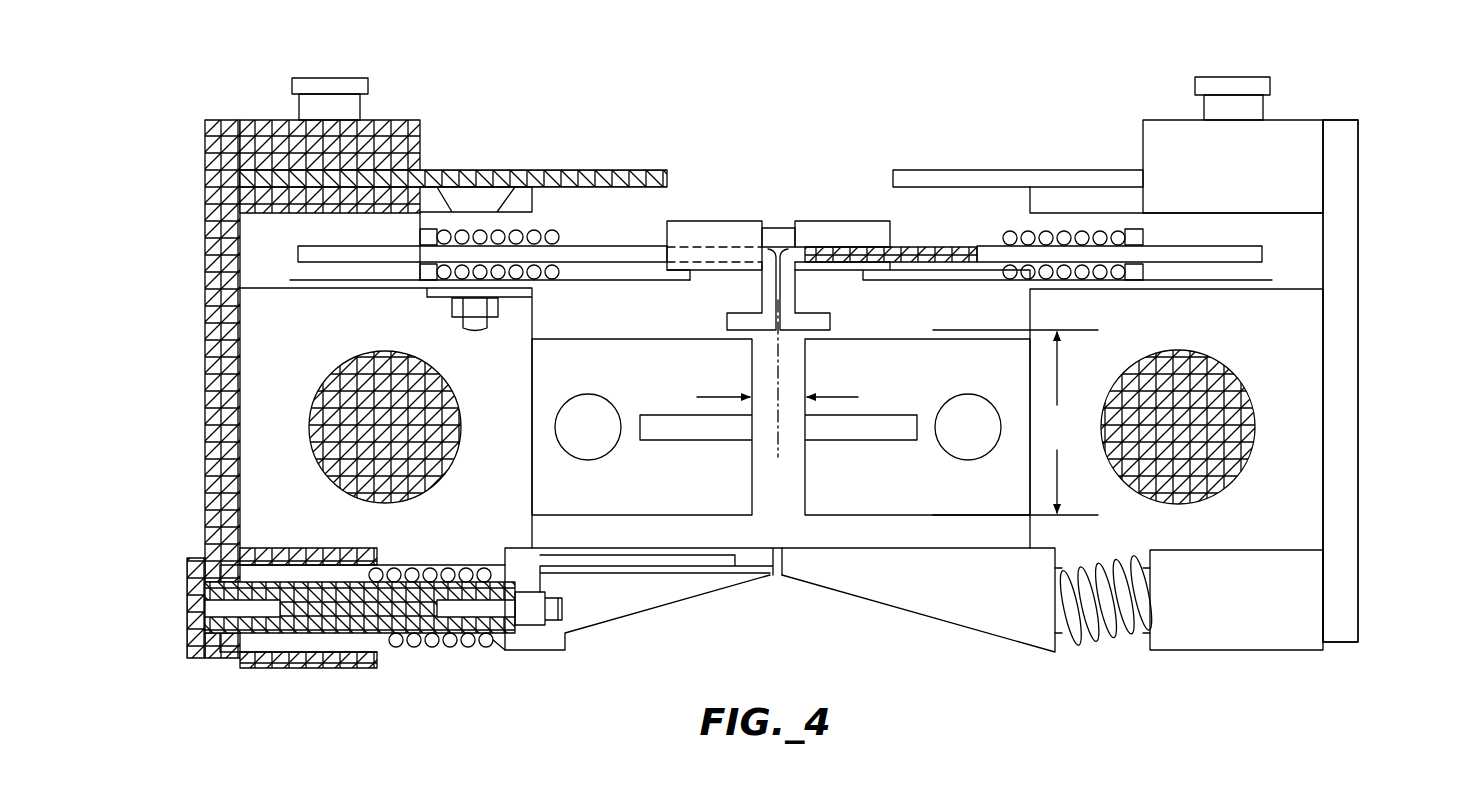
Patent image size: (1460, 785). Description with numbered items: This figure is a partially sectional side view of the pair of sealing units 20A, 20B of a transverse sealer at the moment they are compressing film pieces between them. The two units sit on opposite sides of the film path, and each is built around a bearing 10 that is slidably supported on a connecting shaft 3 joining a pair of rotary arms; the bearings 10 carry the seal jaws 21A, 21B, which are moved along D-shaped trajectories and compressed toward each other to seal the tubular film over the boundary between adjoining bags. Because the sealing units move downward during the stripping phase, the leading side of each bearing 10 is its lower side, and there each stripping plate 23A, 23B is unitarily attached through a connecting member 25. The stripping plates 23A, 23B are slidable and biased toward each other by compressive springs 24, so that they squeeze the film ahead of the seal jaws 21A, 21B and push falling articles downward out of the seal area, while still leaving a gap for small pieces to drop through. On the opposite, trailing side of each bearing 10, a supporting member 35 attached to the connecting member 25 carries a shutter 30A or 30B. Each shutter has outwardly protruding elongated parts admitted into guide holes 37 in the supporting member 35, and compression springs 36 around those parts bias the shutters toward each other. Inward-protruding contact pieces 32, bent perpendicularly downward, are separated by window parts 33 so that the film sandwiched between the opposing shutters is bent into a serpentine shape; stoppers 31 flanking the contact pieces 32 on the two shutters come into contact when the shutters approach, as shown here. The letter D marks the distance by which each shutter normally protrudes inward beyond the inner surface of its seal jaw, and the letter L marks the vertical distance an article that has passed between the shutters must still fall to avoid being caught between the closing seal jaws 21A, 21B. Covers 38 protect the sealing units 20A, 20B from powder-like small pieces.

The sealing unit 20A is at (172, 92).
The sealing unit 20B is at (1368, 100).
The connecting shaft 3 is at (350, 398).
The bearing 10 is at (255, 522).
The seal jaw 21A is at (740, 500).
The seal jaw 21B is at (922, 490).
The stripping plate 23A is at (582, 603).
The stripping plate 23B is at (932, 612).
The compressive spring 24 is at (415, 642).
The connecting member 25 is at (218, 437).
The shutter 30A is at (563, 255).
The shutter 30B is at (905, 245).
The stopper 31 is at (779, 235).
The contact piece 32 is at (765, 300).
The window part 33 is at (812, 243).
The supporting member 35 is at (275, 135).
The compression spring 36 is at (460, 230).
The guide hole 37 is at (420, 243).
The cover 38 is at (470, 180).
The protrusion distance D is at (765, 400).
The vertical fall distance L is at (1015, 422).